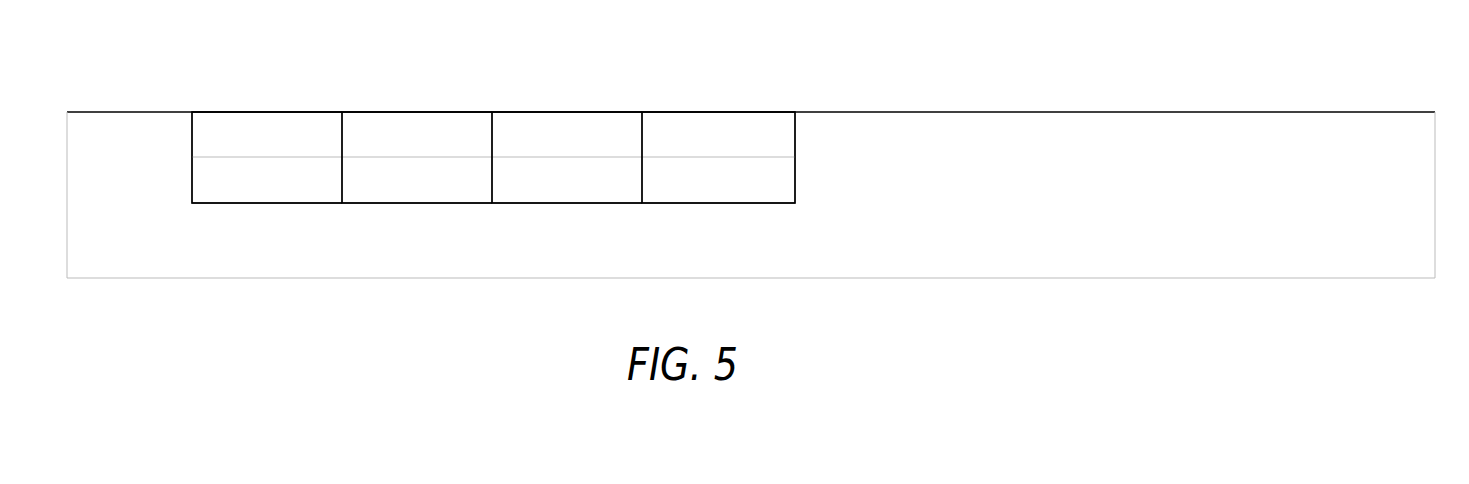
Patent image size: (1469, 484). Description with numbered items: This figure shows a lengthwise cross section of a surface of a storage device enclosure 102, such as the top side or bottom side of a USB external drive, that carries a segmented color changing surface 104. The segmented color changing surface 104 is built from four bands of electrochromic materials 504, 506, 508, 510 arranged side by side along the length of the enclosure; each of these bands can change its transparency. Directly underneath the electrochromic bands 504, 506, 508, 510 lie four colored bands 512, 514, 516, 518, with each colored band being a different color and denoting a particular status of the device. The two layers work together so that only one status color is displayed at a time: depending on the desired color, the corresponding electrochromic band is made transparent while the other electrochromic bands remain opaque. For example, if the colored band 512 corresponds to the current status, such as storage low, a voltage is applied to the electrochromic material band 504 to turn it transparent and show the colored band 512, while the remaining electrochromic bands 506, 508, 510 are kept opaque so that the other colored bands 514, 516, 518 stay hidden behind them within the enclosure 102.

The storage device enclosure 102 is at (770, 257).
The segmented color changing surface 104 is at (590, 112).
The electrochromic material band 504 is at (267, 134).
The electrochromic material band 506 is at (417, 134).
The electrochromic material band 508 is at (567, 134).
The electrochromic material band 510 is at (718, 134).
The colored band 512 is at (267, 180).
The colored band 514 is at (417, 180).
The colored band 516 is at (567, 180).
The colored band 518 is at (718, 180).